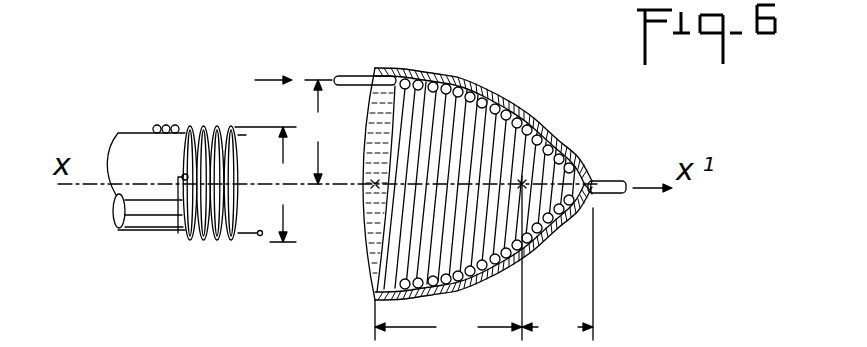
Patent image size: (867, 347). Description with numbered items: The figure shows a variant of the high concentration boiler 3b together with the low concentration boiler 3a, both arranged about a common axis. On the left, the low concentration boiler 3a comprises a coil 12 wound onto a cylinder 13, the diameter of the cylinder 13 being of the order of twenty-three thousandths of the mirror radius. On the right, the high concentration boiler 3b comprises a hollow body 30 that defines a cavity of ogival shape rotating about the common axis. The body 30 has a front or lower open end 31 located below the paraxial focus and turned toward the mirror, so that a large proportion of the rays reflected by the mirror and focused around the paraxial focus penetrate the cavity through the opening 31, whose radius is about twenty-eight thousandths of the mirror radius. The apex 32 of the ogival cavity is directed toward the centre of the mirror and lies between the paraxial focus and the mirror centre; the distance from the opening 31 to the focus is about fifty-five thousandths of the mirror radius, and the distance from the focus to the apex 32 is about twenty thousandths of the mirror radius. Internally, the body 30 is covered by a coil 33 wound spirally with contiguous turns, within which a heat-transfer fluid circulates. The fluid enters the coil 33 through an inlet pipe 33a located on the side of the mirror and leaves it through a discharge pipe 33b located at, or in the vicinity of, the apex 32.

The low concentration boiler 3a is at (196, 186).
The high concentration boiler 3b is at (489, 178).
The coil 12 is at (217, 130).
The cylinder 13 is at (143, 205).
The hollow body 30 is at (530, 110).
The front open end 31 is at (368, 212).
The apex 32 is at (596, 178).
The coil 33 is at (458, 120).
The inlet pipe 33a is at (358, 78).
The discharge pipe 33b is at (612, 195).